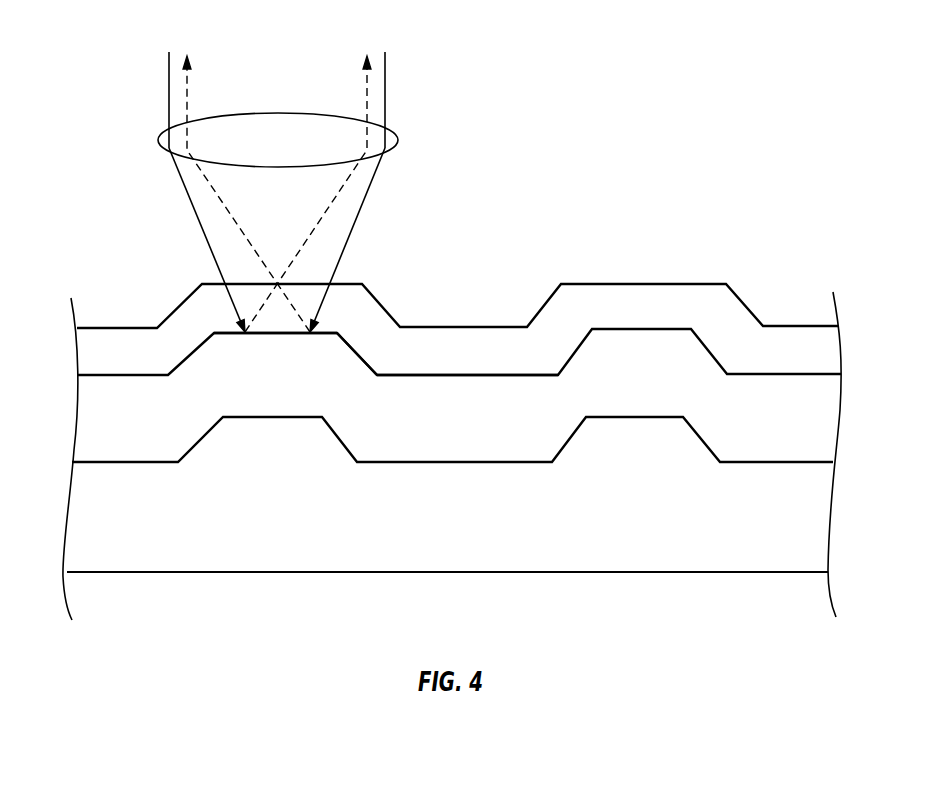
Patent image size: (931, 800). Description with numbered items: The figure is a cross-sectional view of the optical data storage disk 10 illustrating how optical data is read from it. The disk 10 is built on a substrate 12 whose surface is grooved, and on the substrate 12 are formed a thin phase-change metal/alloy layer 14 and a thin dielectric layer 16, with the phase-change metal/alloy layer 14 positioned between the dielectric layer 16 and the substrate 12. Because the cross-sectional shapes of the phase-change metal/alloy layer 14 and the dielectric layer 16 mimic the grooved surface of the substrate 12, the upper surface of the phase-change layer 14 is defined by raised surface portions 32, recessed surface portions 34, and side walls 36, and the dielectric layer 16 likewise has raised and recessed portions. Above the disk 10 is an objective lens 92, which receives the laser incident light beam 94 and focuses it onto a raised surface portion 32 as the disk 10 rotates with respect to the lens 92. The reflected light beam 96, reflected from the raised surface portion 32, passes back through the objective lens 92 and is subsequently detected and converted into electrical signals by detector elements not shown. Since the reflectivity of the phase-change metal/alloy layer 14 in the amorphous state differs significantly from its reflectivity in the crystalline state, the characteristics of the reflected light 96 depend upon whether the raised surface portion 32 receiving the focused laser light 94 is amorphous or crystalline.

The optical data storage disk 10 is at (685, 170).
The substrate 12 is at (480, 518).
The phase-change metal/alloy layer 14 is at (478, 430).
The dielectric layer 16 is at (478, 362).
The raised surface portion 32 is at (292, 316).
The recessed surface portion 34 is at (467, 355).
The side wall 36 is at (364, 347).
The objective lens 92 is at (306, 138).
The laser incident light beam 94 is at (277, 188).
The reflected light beam 96 is at (277, 194).